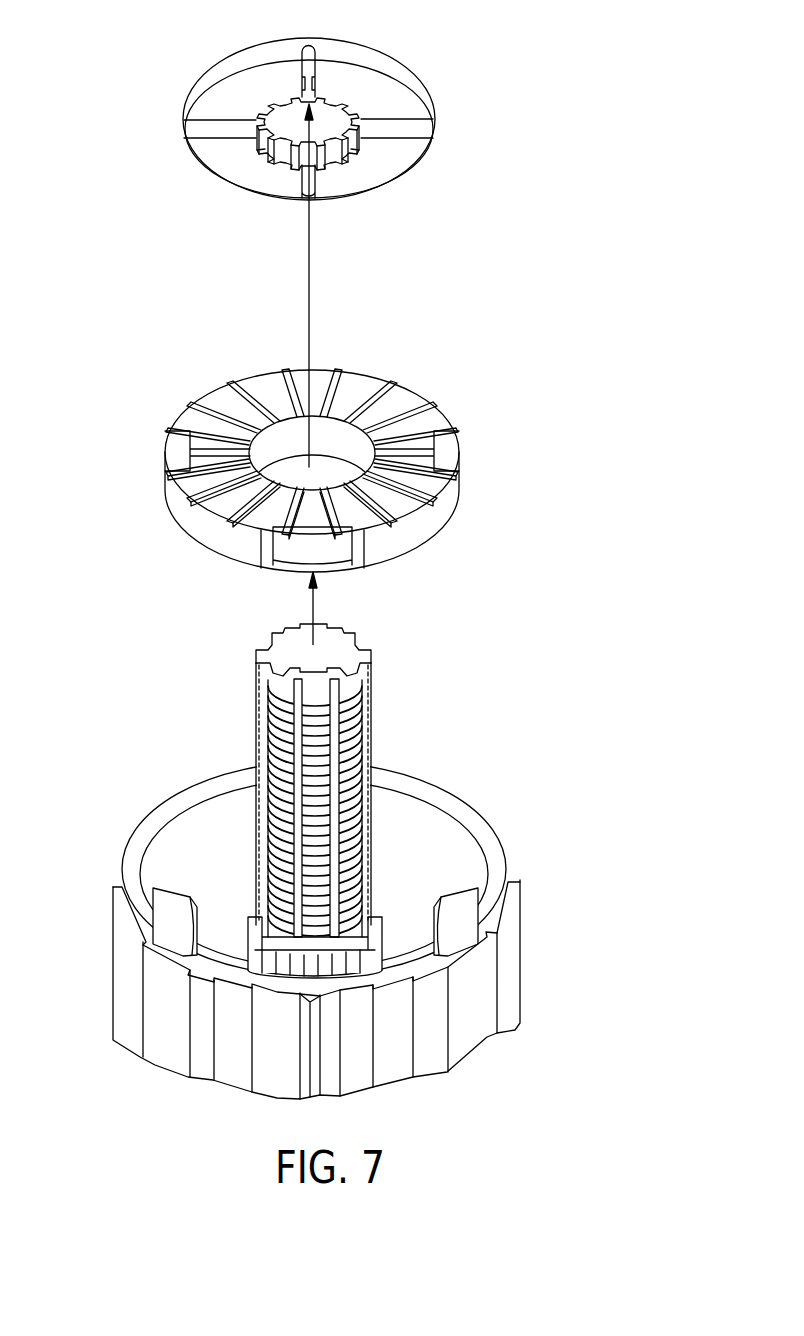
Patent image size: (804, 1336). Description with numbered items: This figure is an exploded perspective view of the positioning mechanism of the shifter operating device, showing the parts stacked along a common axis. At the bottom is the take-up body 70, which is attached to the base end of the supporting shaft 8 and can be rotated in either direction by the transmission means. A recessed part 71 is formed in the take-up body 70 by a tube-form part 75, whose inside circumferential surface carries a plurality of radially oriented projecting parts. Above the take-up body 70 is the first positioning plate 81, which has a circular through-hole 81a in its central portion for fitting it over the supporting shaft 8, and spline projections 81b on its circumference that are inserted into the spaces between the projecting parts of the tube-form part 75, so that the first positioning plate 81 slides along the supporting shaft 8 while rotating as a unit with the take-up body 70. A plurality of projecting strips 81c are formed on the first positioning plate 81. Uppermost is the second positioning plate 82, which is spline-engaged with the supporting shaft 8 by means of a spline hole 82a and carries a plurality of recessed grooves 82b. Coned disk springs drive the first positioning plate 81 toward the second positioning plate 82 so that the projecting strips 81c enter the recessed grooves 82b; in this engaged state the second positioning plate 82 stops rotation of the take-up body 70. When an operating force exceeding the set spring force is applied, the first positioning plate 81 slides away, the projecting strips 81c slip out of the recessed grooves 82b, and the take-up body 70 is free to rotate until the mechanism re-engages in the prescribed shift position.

The second positioning plate 82 is at (335, 236).
The spline hole 82a is at (328, 118).
The recessed grooves 82b is at (318, 178).
The first positioning plate 81 is at (319, 463).
The circular through-hole 81a is at (276, 442).
The spline projections 81b is at (503, 470).
The projecting strips 81c is at (262, 531).
The supporting shaft 8 is at (372, 698).
The take-up body 70 is at (322, 907).
The recessed part 71 is at (423, 822).
The tube-form part 75 is at (125, 860).